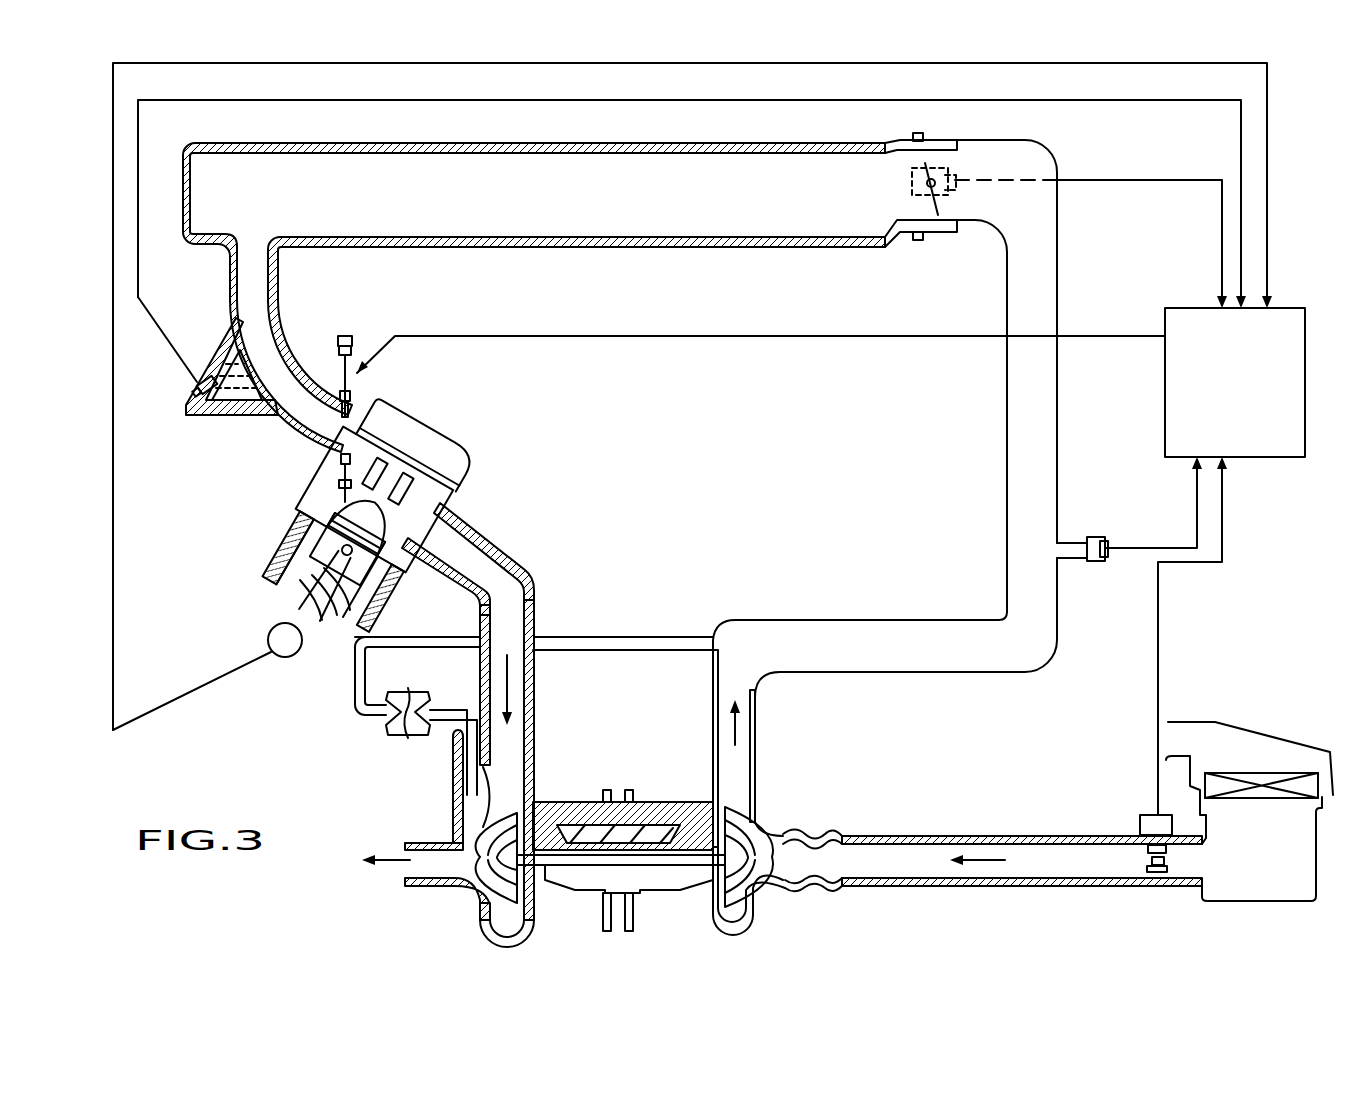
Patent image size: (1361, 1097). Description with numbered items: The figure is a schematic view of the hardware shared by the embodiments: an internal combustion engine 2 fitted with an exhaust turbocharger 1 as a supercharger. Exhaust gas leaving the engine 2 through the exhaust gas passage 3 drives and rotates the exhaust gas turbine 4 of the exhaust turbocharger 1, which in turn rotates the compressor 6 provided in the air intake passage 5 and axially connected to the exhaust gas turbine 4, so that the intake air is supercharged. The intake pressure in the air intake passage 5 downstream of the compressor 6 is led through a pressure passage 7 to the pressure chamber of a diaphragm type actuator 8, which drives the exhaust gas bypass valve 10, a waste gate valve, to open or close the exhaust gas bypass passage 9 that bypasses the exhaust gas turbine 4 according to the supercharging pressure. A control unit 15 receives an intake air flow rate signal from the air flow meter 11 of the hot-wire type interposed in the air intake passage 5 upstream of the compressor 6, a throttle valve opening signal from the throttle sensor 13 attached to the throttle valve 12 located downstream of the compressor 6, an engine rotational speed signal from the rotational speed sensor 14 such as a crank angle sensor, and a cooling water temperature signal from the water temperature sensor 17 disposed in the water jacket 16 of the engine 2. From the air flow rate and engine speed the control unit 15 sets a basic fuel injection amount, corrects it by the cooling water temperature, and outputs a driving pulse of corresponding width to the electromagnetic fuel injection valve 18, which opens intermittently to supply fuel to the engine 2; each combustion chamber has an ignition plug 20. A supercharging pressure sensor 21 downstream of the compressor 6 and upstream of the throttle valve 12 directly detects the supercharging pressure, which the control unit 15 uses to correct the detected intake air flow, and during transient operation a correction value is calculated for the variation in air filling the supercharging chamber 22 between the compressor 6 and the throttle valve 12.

The exhaust turbocharger 1 is at (596, 900).
The internal combustion engine 2 is at (463, 435).
The exhaust gas passage 3 is at (534, 693).
The exhaust gas turbine 4 is at (500, 903).
The air intake passage 5 is at (714, 705).
The compressor 6 is at (772, 897).
The pressure passage 7 is at (612, 640).
The diaphragm type actuator 8 is at (385, 736).
The exhaust gas bypass passage 9 is at (462, 797).
The exhaust gas bypass valve 10 is at (490, 757).
The air flow meter 11 is at (1150, 815).
The throttle valve 12 is at (943, 218).
The throttle sensor 13 is at (910, 228).
The rotational speed sensor 14 is at (272, 628).
The control unit 15 is at (1305, 337).
The water jacket 16 is at (243, 416).
The water temperature sensor 17 is at (207, 375).
The fuel injection valve 18 is at (352, 334).
The ignition plug 20 is at (340, 470).
The supercharging pressure sensor 21 is at (1093, 562).
The supercharging chamber 22 is at (1006, 446).